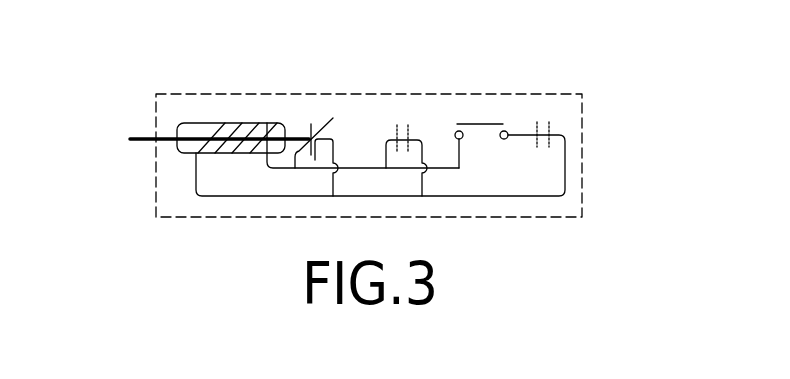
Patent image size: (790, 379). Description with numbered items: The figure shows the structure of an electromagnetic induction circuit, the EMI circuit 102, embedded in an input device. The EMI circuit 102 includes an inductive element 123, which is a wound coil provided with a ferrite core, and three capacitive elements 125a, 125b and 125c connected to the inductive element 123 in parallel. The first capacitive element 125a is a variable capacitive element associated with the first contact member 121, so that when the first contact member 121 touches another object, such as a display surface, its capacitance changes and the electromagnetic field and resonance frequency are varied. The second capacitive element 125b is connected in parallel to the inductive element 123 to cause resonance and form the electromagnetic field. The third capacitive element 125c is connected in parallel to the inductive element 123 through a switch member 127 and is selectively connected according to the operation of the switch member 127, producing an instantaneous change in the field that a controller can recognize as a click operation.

The EMI circuit 102 is at (588, 92).
The first contact member 121 is at (130, 139).
The inductive element 123 is at (230, 122).
The first capacitive element 125a is at (311, 123).
The second capacitive element 125b is at (401, 124).
The third capacitive element 125c is at (543, 122).
The switch member 127 is at (482, 124).